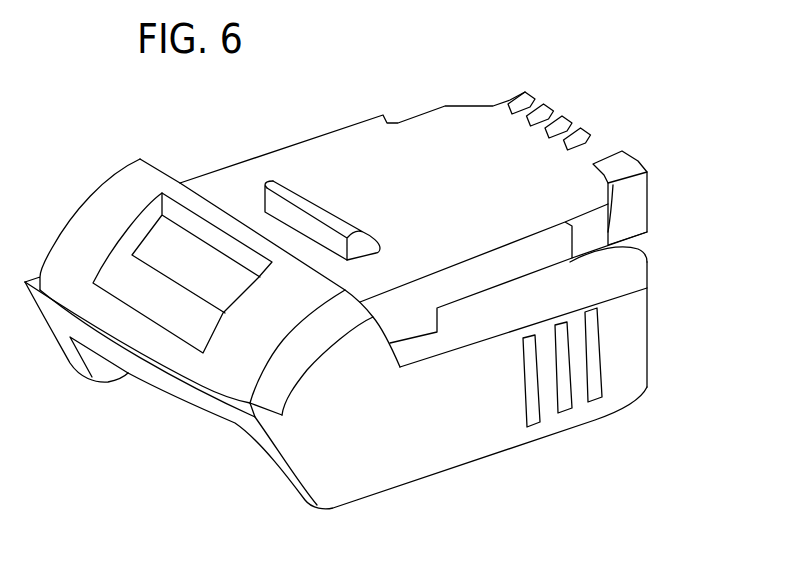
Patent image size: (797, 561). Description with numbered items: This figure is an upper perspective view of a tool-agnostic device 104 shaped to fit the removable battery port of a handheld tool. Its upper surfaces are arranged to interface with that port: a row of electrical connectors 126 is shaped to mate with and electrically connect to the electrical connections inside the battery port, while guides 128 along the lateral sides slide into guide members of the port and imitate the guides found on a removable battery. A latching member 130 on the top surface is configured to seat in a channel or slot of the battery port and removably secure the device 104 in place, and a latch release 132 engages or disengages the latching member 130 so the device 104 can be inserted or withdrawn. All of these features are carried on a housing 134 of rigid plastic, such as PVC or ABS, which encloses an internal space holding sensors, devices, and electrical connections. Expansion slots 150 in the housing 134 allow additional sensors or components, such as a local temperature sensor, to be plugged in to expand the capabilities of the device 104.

The tool-agnostic device 104 is at (625, 78).
The electrical connectors 126 is at (617, 156).
The guides 128 is at (632, 250).
The latching member 130 is at (285, 190).
The latch release 132 is at (137, 240).
The housing 134 is at (648, 360).
The expansion slots 150 is at (597, 400).